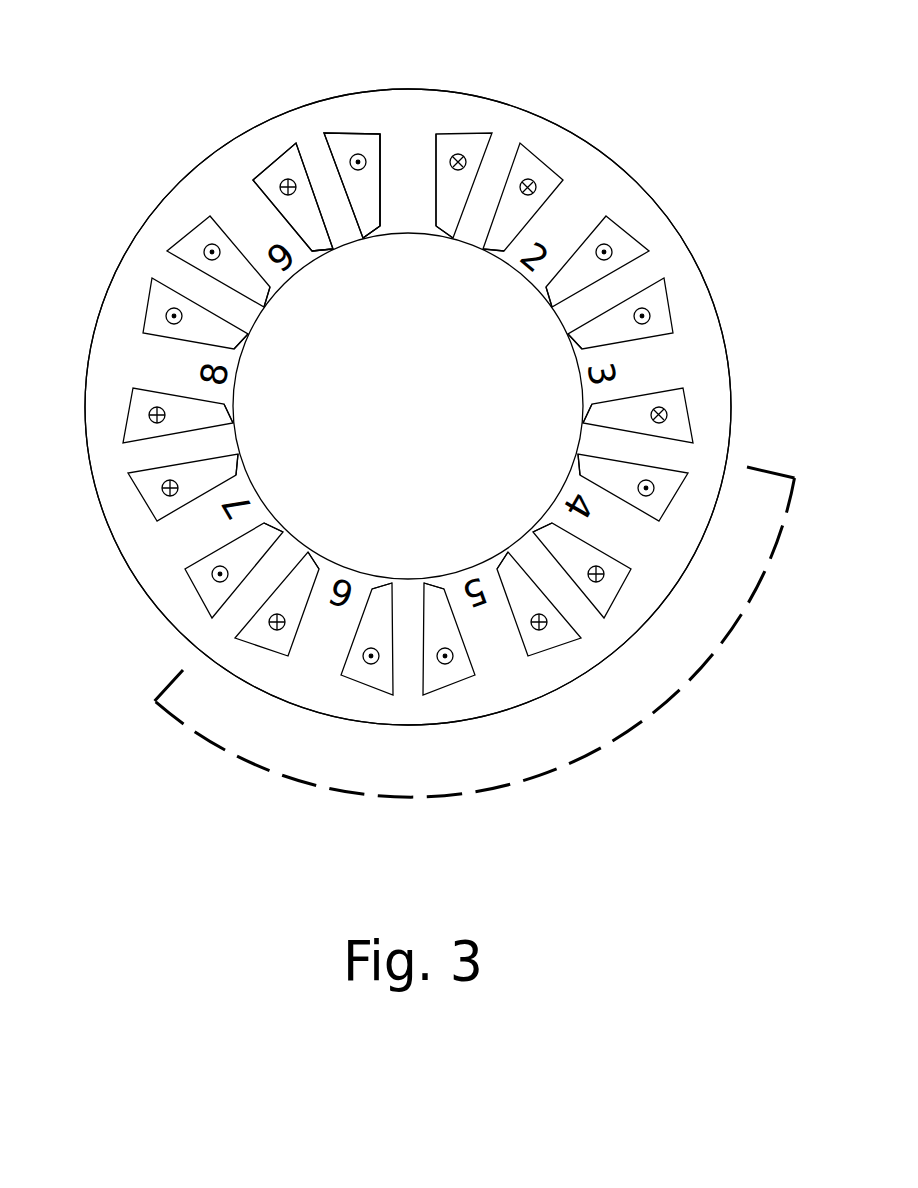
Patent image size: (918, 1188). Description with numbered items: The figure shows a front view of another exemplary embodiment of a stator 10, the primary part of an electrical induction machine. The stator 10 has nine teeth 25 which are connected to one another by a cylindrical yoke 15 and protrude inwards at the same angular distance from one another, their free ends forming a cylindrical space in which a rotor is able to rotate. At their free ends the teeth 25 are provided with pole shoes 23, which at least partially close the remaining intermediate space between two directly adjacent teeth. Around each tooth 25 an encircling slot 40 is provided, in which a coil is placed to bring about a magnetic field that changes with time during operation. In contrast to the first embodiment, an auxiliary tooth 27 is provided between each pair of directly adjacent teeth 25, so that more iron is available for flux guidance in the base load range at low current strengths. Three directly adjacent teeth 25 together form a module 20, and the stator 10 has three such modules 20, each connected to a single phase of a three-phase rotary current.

The stator 10 is at (613, 110).
The yoke 15 is at (687, 277).
The module 20 is at (475, 636).
The pole shoe 23 is at (263, 523).
The tooth 25 is at (403, 143).
The auxiliary tooth 27 is at (308, 148).
The encircling slot 40 is at (135, 397).